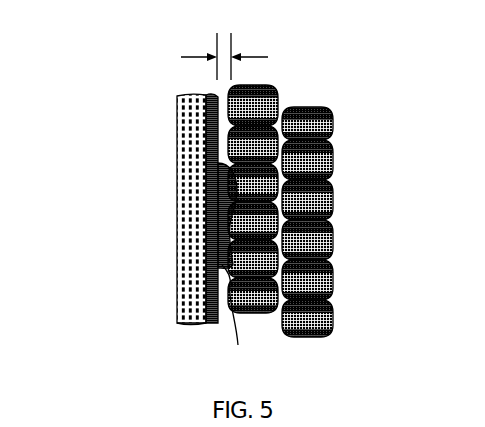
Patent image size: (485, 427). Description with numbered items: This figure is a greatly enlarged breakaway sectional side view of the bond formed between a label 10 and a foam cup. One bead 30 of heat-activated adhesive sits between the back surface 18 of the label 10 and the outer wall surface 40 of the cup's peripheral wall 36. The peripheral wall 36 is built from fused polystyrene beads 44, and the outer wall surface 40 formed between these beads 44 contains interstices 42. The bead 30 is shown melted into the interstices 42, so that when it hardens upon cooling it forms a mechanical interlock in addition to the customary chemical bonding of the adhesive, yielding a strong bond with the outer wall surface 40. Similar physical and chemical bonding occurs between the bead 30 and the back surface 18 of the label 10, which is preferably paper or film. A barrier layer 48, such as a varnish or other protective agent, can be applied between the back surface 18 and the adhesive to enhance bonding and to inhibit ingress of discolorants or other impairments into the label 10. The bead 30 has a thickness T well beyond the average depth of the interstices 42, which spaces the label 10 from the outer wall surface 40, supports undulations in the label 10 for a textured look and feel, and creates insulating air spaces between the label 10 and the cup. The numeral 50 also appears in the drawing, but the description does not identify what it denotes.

The label 10 is at (176, 130).
The back surface 18 is at (220, 278).
The bead 30 is at (213, 290).
The peripheral wall 36 is at (314, 203).
The outer wall surface 40 is at (241, 304).
The interstices 42 is at (243, 200).
The fused polystyrene beads 44 is at (318, 127).
The barrier layer 48 is at (241, 319).
The element 50 is at (345, 418).
The thickness T is at (252, 57).